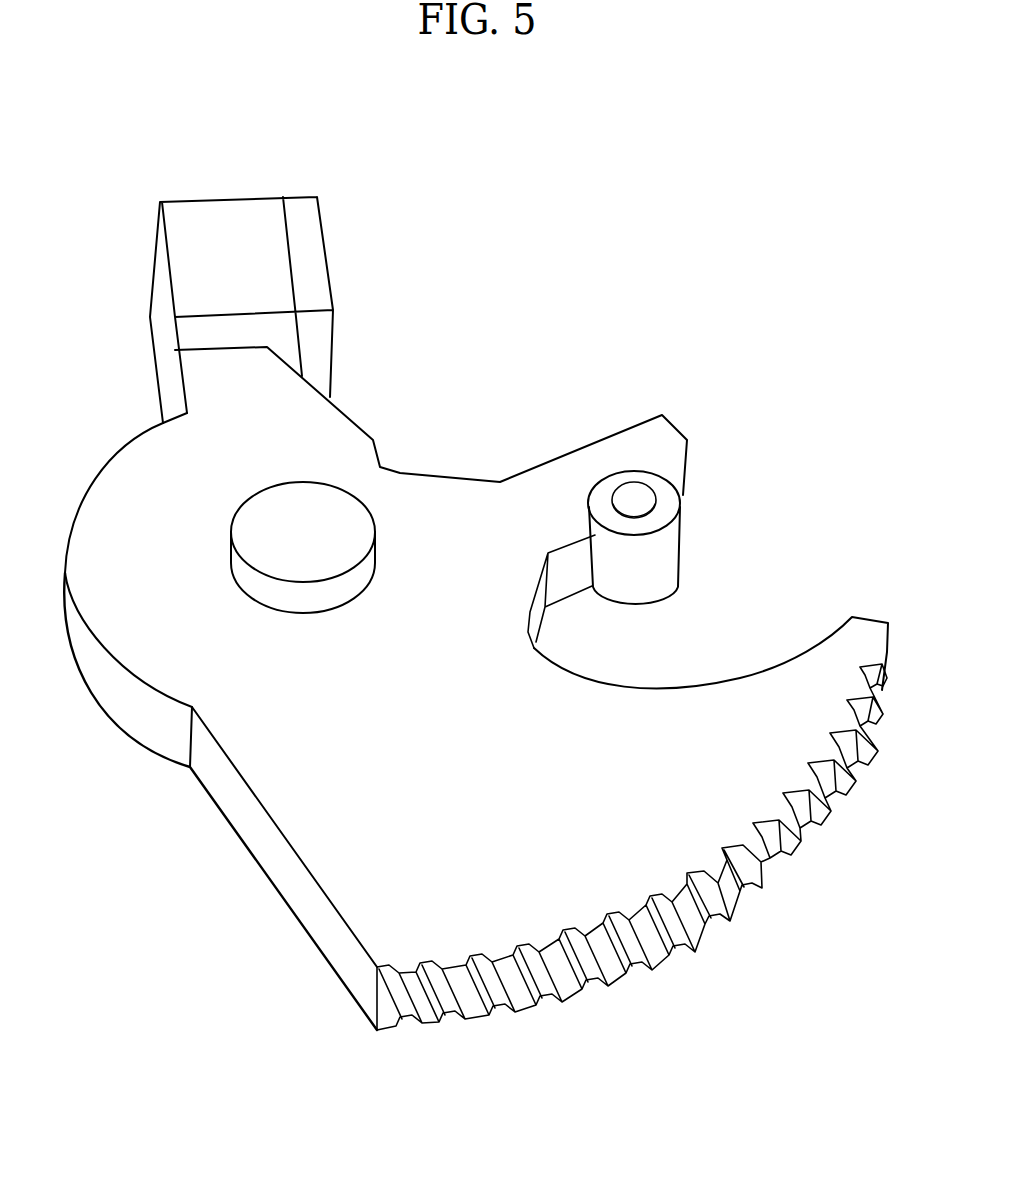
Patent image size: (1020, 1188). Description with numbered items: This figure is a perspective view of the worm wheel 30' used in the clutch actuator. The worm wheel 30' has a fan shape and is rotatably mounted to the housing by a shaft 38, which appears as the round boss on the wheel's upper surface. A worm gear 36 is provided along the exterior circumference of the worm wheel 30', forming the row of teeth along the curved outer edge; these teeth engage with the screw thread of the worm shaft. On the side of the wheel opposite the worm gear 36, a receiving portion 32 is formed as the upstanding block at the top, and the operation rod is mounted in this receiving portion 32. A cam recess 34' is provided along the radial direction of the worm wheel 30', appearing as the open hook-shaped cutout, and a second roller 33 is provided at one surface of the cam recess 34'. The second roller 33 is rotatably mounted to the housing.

The worm wheel 30' is at (411, 614).
The receiving portion 32 is at (248, 212).
The second roller 33 is at (673, 550).
The cam recess 34' is at (711, 616).
The worm gear 36 is at (742, 903).
The shaft 38 is at (330, 500).